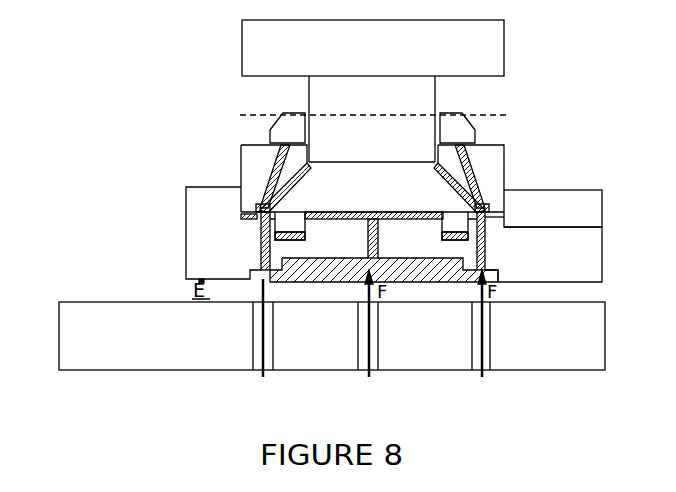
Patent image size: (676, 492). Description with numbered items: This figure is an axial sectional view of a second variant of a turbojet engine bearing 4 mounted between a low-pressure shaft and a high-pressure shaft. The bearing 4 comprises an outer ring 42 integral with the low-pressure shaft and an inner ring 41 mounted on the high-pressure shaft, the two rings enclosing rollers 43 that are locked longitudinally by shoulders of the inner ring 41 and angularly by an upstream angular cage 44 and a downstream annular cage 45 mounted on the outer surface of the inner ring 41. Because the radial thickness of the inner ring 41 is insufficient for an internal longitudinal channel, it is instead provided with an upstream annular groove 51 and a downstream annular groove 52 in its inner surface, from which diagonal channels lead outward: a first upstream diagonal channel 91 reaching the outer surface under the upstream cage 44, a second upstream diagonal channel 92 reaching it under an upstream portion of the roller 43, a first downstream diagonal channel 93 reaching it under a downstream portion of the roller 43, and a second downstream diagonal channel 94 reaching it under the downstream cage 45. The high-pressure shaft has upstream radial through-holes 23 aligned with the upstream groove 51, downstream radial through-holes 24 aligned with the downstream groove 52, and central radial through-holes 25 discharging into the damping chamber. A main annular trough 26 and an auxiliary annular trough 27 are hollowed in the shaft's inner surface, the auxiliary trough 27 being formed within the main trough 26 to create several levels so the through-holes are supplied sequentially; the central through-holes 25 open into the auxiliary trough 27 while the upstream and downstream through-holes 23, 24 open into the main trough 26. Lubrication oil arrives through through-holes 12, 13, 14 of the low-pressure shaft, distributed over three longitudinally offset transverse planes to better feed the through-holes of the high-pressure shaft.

The bearing 4 is at (527, 106).
The through-hole 12 is at (262, 377).
The through-hole 13 is at (369, 377).
The through-hole 14 is at (482, 377).
The upstream radial through-hole 23 is at (263, 263).
The downstream radial through-hole 24 is at (485, 257).
The central radial through-hole 25 is at (376, 236).
The main annular trough 26 is at (487, 271).
The auxiliary annular trough 27 is at (450, 272).
The inner ring 41 is at (498, 158).
The outer ring 42 is at (490, 45).
The rollers 43 is at (410, 90).
The upstream angular cage 44 is at (295, 122).
The downstream annular cage 45 is at (452, 121).
The upstream annular groove 51 is at (253, 216).
The downstream annular groove 52 is at (492, 212).
The first upstream diagonal channel 91 is at (268, 178).
The second upstream diagonal channel 92 is at (287, 178).
The first downstream diagonal channel 93 is at (452, 171).
The second downstream diagonal channel 94 is at (480, 178).